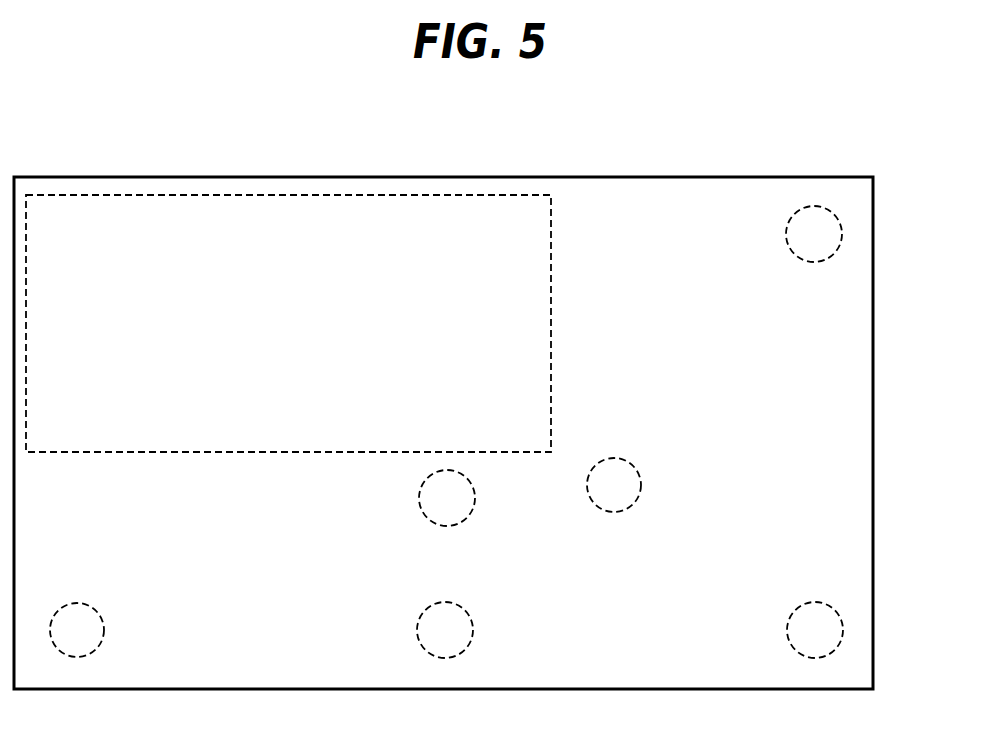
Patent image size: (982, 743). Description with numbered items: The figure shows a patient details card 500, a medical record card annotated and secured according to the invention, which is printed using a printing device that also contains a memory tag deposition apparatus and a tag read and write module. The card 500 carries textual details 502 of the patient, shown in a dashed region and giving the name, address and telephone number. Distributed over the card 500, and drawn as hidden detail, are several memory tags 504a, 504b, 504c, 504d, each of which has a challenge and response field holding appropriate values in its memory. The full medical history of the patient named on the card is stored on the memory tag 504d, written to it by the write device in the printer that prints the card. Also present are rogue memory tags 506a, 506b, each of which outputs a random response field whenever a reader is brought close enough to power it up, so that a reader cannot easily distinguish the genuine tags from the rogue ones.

The card 500 is at (685, 175).
The textual details 502 is at (508, 195).
The memory tag 504a is at (813, 262).
The memory tag 504b is at (418, 500).
The memory tag 504c is at (104, 632).
The memory tag 504d is at (788, 630).
The rogue memory tag 506a is at (642, 480).
The rogue memory tag 506b is at (473, 632).